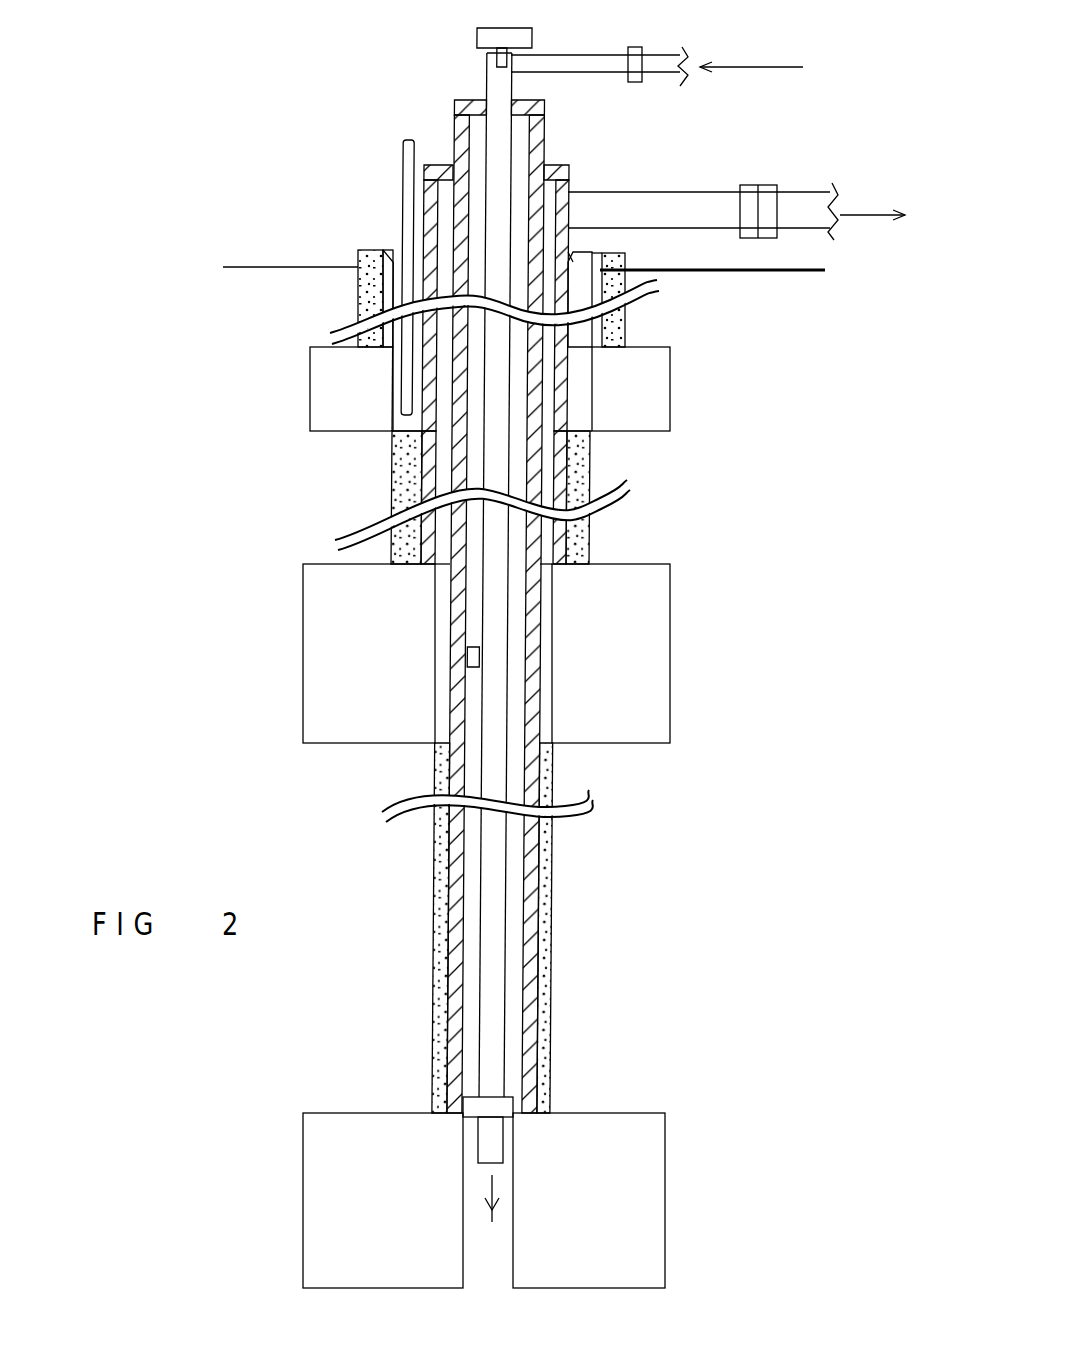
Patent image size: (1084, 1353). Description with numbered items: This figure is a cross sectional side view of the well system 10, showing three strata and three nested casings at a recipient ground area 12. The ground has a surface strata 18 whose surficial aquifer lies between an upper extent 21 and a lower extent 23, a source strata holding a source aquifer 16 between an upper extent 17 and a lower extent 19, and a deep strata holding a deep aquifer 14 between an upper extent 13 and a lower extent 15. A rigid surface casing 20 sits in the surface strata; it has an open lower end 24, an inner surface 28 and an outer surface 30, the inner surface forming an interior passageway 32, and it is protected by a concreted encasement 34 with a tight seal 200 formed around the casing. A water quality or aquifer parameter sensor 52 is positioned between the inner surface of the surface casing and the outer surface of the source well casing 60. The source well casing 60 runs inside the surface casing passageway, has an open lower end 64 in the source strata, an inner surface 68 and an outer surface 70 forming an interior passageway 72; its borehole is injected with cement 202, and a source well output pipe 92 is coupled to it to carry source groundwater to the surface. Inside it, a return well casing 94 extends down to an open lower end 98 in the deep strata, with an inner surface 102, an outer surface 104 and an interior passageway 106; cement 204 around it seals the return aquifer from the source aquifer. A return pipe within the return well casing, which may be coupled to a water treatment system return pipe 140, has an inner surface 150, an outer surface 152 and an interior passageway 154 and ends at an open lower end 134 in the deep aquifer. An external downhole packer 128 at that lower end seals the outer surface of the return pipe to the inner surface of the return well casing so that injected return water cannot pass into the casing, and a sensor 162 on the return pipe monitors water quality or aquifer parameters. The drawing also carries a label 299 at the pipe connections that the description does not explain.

The well system 10 is at (307, 132).
The recipient ground area 12 is at (243, 266).
The upper extent 13 is at (647, 1107).
The deep aquifer 14 is at (608, 1152).
The lower extent 15 is at (620, 1297).
The source aquifer 16 is at (647, 622).
The upper extent 17 is at (655, 567).
The surface strata 18 is at (660, 398).
The lower extent 19 is at (652, 745).
The surface casing 20 is at (400, 257).
The upper extent 21 is at (670, 348).
The lower extent 23 is at (653, 433).
The open second lower end 24 is at (585, 335).
The inner surface 28 is at (575, 268).
The outer surface 30 is at (600, 318).
The interior passageway 32 is at (393, 289).
The concreted encasement 34 is at (393, 300).
The water quality or aquifer parameter sensor 52 is at (408, 140).
The source well casing 60 is at (402, 478).
The open second lower end 64 is at (395, 553).
The inner surface 68 is at (560, 538).
The outer surface 70 is at (573, 480).
The interior passageway 72 is at (445, 448).
The source well output pipe 92 is at (672, 208).
The return well casing 94 is at (540, 157).
The open second lower end 98 is at (513, 1090).
The inner surface 102 is at (462, 1012).
The outer surface 104 is at (465, 1000).
The interior passageway 106 is at (517, 962).
The external downhole packer 128 is at (503, 1110).
The open second lower end 134 is at (492, 1148).
The water treatment system return pipe 140 is at (663, 55).
The inner surface 150 is at (505, 912).
The outer surface 152 is at (508, 866).
The interior passageway 154 is at (492, 1002).
The sensor 162 is at (476, 26).
The casing seal 200 is at (358, 260).
The cement 202 is at (410, 500).
The cement 204 is at (553, 773).
The pipe connections 299 is at (566, 172).